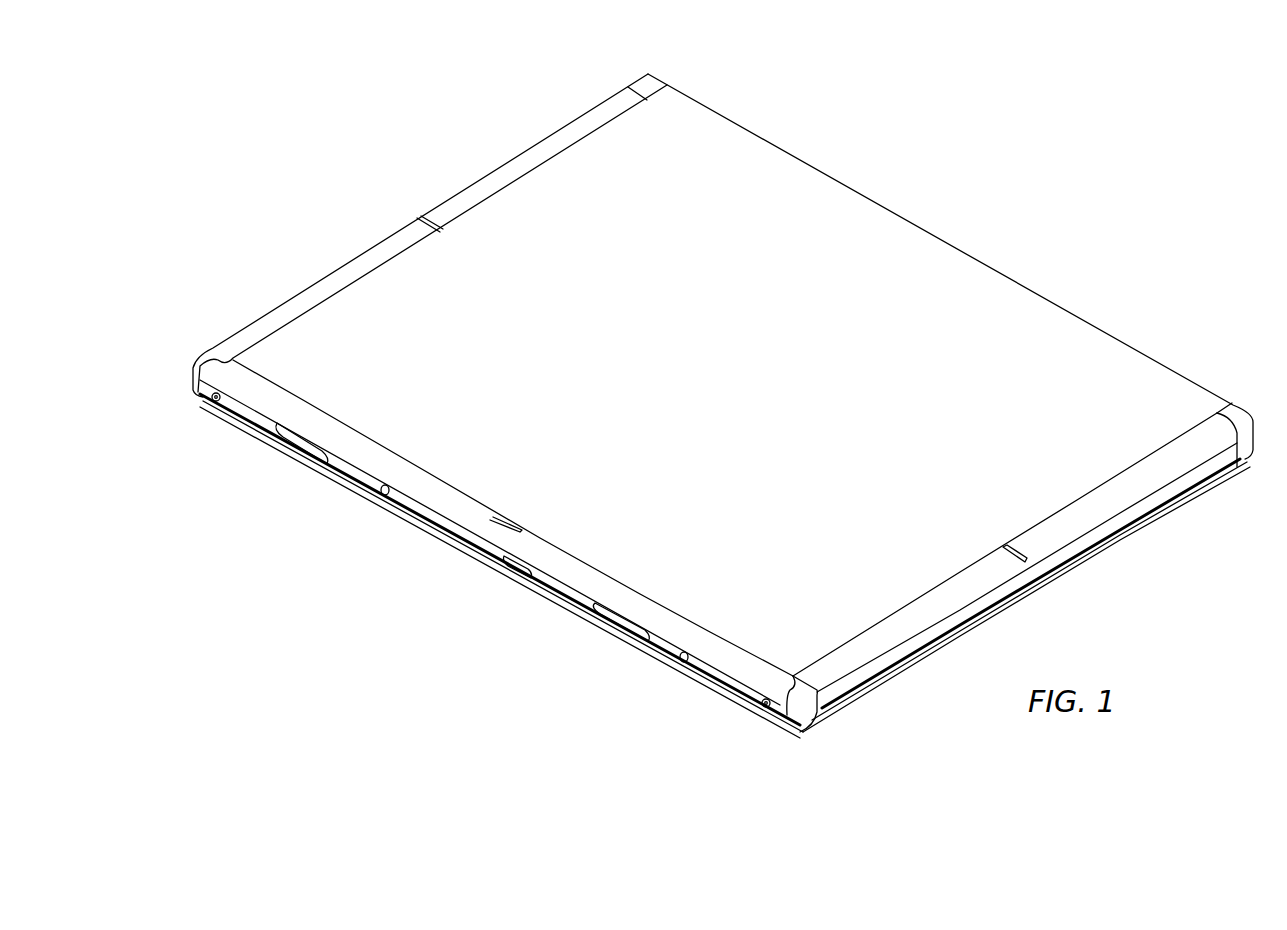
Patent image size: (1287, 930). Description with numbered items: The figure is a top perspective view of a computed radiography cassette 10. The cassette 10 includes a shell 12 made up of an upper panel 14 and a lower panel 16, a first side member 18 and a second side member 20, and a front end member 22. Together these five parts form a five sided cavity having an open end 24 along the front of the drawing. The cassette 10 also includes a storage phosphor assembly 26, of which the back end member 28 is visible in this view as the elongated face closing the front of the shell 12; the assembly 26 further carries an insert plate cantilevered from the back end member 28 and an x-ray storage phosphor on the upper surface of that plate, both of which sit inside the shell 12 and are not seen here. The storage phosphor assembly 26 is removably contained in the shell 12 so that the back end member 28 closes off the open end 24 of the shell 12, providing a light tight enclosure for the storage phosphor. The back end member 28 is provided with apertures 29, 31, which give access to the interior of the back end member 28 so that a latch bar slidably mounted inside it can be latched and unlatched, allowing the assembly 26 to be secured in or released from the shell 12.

The computed radiography cassette 10 is at (928, 184).
The shell 12 is at (729, 114).
The upper panel 14 is at (1035, 338).
The lower panel 16 is at (903, 668).
The first side member 18 is at (388, 243).
The second side member 20 is at (1058, 540).
The front end member 22 is at (804, 163).
The open end 24 is at (649, 591).
The storage phosphor assembly 26 is at (689, 686).
The back end member 28 is at (735, 685).
The aperture 29 is at (306, 440).
The aperture 31 is at (515, 570).